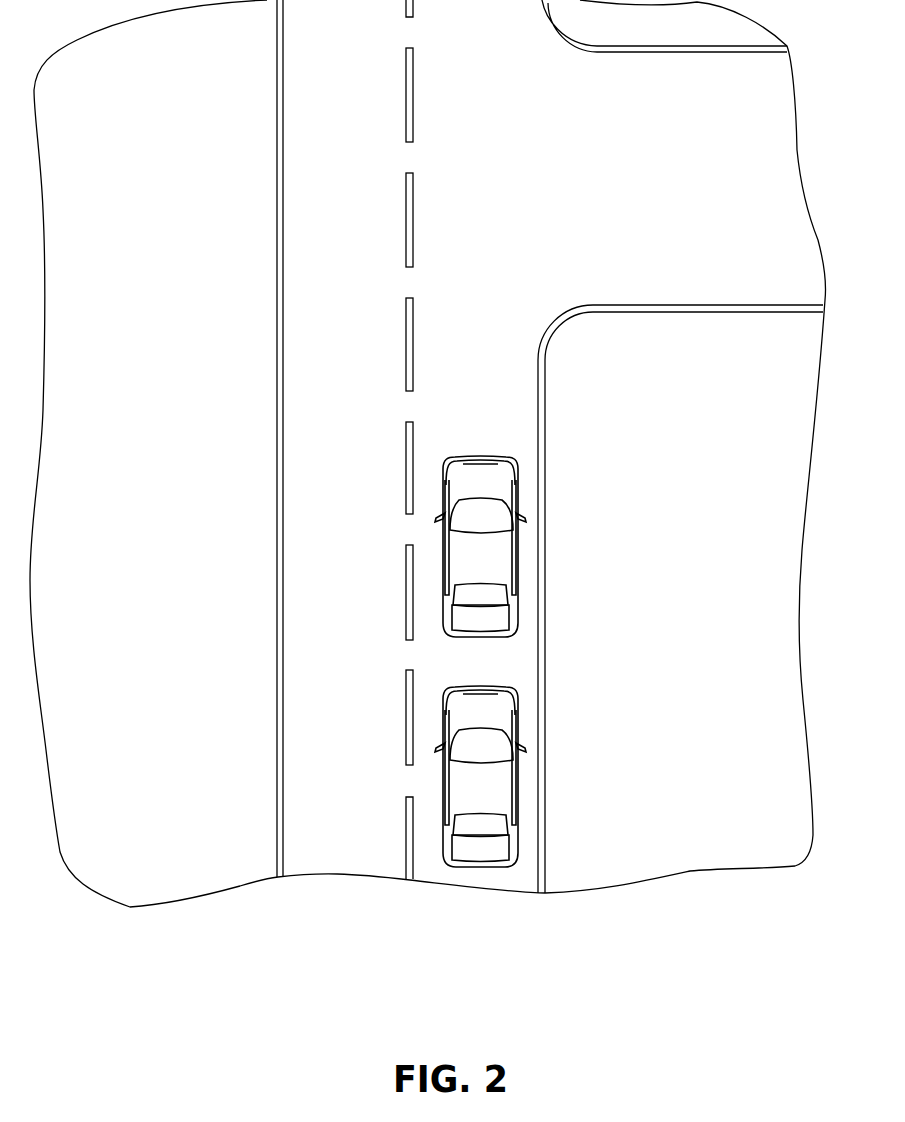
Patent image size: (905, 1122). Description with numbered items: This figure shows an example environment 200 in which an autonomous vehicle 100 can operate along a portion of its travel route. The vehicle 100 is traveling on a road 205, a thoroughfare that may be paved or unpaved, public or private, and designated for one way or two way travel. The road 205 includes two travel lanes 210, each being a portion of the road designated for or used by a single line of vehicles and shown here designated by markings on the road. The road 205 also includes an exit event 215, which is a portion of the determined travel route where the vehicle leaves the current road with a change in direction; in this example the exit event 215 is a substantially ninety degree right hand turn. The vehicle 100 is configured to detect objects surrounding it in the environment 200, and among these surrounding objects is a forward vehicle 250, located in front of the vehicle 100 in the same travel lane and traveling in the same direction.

The environment 200 is at (225, 182).
The road 205 is at (323, 355).
The travel lanes 210 is at (332, 847).
The exit event 215 is at (582, 331).
The forward vehicle 250 is at (493, 553).
The vehicle 100 is at (493, 798).